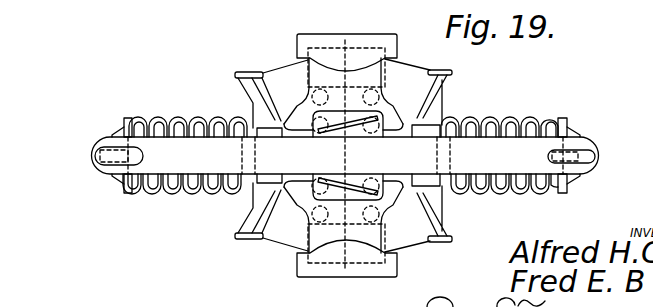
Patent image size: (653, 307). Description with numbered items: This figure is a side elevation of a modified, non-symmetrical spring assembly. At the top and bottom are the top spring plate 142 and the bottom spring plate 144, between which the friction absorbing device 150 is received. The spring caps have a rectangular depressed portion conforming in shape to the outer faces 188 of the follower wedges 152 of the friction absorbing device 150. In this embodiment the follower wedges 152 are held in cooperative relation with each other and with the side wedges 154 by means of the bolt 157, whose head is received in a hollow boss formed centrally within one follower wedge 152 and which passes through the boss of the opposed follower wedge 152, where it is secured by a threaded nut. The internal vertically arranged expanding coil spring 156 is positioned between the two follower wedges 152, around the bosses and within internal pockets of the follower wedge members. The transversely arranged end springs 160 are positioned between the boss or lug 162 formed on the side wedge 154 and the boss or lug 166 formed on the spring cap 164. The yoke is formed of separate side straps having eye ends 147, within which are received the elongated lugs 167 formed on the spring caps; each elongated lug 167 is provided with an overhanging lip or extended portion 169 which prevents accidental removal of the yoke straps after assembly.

The top spring plate 142 is at (296, 39).
The bottom spring plate 144 is at (302, 270).
The eye ends 147 is at (137, 176).
The friction absorbing device 150 is at (274, 71).
The follower wedges 152 is at (448, 76).
The side wedges 154 is at (236, 77).
The internal vertically arranged expanding coil spring 156 is at (312, 203).
The bolt 157 is at (335, 99).
The end springs 160 is at (157, 125).
The boss or lug 162 is at (450, 137).
The spring cap 164 is at (573, 142).
The boss or lug 166 is at (561, 170).
The elongated lugs 167 is at (115, 166).
The overhanging lip or extended portion 169 is at (98, 153).
The outer faces 188 is at (375, 45).